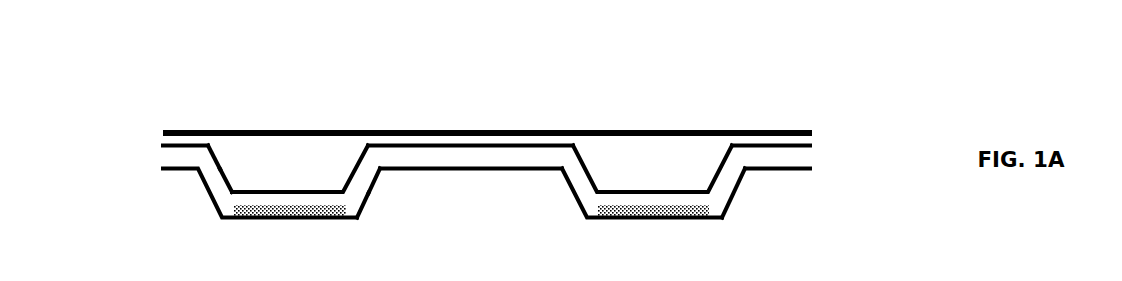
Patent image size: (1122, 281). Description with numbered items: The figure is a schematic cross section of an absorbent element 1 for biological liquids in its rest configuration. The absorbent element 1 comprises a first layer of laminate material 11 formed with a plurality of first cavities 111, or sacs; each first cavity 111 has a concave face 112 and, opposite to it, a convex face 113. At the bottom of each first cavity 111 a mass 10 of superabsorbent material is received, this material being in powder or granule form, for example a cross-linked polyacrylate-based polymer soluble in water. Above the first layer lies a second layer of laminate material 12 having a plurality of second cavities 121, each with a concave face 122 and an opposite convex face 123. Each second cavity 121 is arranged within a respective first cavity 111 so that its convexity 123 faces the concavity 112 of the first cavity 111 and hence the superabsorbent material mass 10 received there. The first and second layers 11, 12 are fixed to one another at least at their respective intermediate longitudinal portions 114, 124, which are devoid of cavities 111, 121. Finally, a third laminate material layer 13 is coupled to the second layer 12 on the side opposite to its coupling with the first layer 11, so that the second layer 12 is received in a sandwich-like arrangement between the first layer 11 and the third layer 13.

The absorbent element 1 is at (829, 126).
The mass of superabsorbent material 10 is at (323, 212).
The first layer of laminate material 11 is at (813, 172).
The second layer of laminate material 12 is at (810, 146).
The third laminate material layer 13 is at (163, 135).
The first cavity 111 is at (735, 205).
The concave face of first cavity 112 is at (372, 183).
The convex face of first cavity 113 is at (360, 203).
The intermediate longitudinal portion of first layer 114 is at (526, 173).
The second cavity 121 is at (609, 179).
The concave face of second cavity 122 is at (223, 170).
The convex face of second cavity 123 is at (225, 182).
The intermediate longitudinal portion of second layer 124 is at (527, 147).